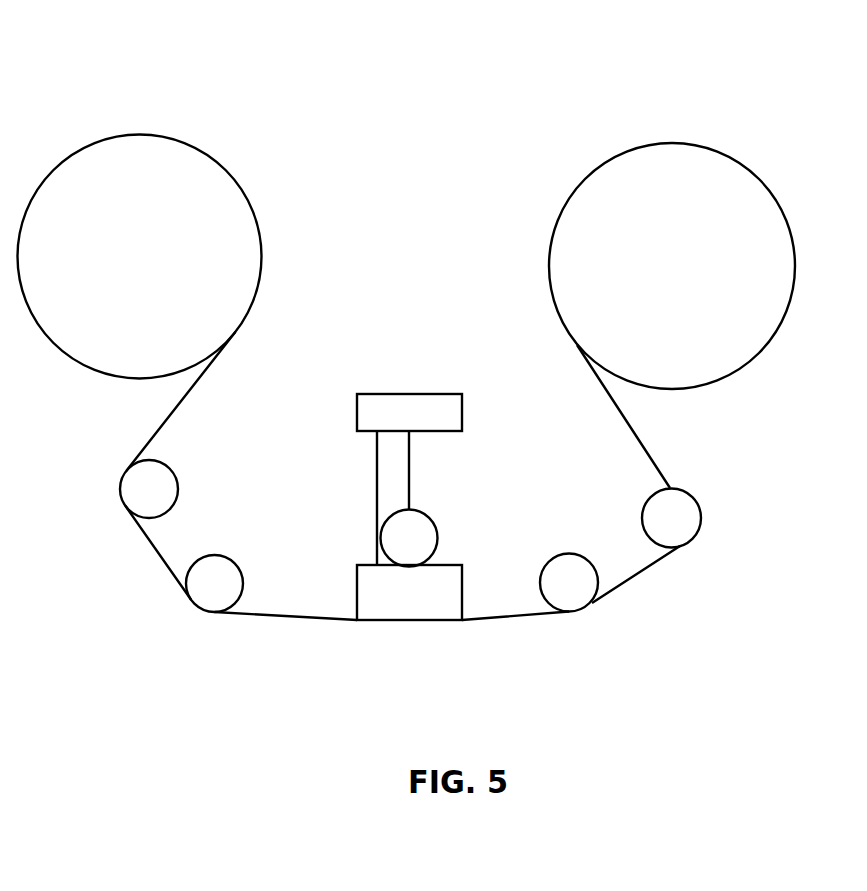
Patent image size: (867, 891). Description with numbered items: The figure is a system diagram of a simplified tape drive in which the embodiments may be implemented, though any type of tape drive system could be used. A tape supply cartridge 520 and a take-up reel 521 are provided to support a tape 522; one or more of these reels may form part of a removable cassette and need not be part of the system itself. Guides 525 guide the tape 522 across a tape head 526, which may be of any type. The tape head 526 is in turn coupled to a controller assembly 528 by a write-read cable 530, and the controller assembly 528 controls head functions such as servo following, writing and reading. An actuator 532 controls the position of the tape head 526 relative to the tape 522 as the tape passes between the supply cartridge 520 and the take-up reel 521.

The tape supply cartridge 520 is at (142, 134).
The take-up reel 521 is at (671, 144).
The tape 522 is at (289, 618).
The guides 525 is at (177, 486).
The tape head 526 is at (471, 581).
The controller assembly 528 is at (407, 393).
The write-read cable 530 is at (378, 535).
The actuator 532 is at (432, 513).